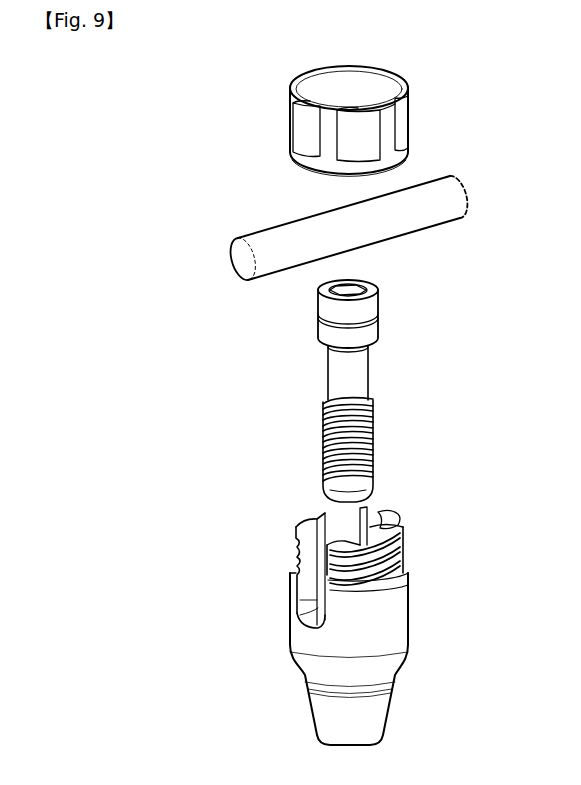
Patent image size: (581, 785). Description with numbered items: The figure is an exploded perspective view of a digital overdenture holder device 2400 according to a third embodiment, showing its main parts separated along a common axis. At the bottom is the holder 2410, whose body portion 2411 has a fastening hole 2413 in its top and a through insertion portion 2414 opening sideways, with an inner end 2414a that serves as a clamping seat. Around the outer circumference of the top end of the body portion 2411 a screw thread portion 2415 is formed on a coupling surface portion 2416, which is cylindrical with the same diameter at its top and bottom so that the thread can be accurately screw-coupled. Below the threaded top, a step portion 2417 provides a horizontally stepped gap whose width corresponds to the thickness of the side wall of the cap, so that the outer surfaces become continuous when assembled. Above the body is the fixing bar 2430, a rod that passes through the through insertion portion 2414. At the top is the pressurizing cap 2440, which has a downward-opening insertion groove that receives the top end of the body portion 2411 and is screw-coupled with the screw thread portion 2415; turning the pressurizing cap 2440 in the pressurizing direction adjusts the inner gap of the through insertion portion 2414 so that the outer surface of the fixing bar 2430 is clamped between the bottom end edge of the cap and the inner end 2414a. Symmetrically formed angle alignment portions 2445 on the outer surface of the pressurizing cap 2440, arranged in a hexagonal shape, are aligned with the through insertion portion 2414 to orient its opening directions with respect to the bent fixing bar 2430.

The implant fixture assembly 2400 is at (153, 246).
The pressurizing cap 2440 is at (290, 123).
The angle alignment portion 2445 is at (303, 130).
The fixing bar 2430 is at (420, 232).
The fixture body 2410 is at (289, 643).
The body portion 2411 is at (392, 633).
The fastening hole 2413 is at (300, 517).
The through insertion portion 2414 is at (391, 525).
The inner end of the through insertion portion 2414a is at (296, 617).
The screw thread portion 2415 is at (297, 543).
The coupling surface portion 2416 is at (296, 572).
The step portion 2417 is at (404, 570).